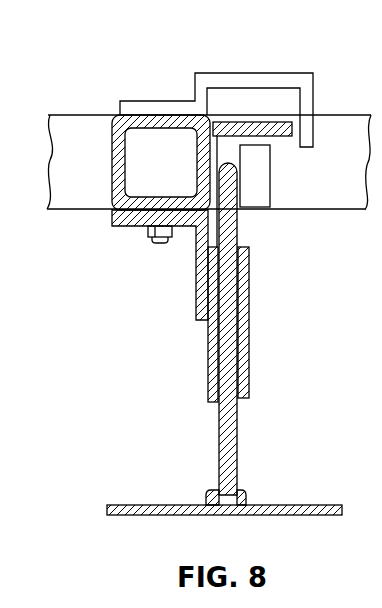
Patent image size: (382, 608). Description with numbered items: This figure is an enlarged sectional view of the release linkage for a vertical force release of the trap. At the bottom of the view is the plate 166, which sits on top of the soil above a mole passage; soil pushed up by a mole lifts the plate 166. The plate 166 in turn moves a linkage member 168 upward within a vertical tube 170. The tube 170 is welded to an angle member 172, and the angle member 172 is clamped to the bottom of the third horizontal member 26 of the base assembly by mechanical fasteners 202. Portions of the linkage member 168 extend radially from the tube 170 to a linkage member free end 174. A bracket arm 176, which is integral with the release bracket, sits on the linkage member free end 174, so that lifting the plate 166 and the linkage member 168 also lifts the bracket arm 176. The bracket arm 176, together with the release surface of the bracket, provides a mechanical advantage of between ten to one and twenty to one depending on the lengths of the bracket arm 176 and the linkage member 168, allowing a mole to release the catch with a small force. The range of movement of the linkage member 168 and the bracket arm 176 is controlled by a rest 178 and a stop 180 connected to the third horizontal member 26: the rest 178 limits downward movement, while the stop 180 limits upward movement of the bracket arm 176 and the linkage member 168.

The third horizontal member 26 is at (112, 160).
The plate 166 is at (311, 505).
The linkage member 168 is at (237, 428).
The vertical tube 170 is at (249, 334).
The angle member 172 is at (196, 280).
The linkage member free end 174 is at (230, 136).
The bracket arm 176 is at (281, 137).
The rest 178 is at (270, 180).
The stop 180 is at (272, 73).
The mechanical fasteners 202 is at (148, 232).